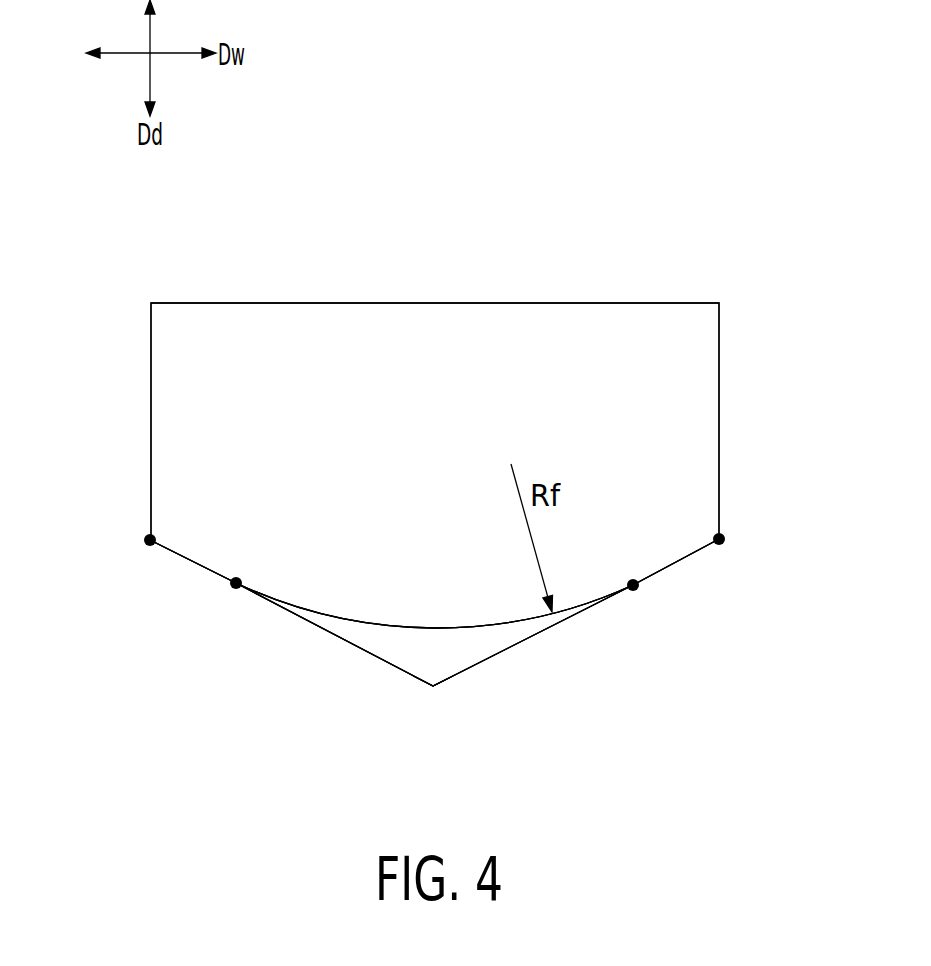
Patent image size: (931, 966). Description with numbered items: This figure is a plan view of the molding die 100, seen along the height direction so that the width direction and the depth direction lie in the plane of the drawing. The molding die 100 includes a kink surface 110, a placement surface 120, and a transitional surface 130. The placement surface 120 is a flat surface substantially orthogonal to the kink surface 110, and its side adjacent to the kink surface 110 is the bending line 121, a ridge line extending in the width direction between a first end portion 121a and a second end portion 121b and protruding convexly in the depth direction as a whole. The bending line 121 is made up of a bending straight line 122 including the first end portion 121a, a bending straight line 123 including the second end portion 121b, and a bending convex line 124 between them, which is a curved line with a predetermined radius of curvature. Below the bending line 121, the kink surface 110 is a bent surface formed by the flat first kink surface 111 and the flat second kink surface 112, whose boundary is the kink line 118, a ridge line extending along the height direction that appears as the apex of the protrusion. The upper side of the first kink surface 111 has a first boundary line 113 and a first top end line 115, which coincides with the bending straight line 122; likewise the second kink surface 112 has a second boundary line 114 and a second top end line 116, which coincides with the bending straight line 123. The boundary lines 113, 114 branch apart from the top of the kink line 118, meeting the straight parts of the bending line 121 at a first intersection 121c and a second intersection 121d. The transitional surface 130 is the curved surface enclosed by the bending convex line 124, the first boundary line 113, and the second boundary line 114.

The molding die 100 is at (430, 252).
The kink surface 110 is at (475, 667).
The first kink surface 111 is at (313, 624).
The second kink surface 112 is at (557, 624).
The first boundary line 113 is at (292, 613).
The second boundary line 114 is at (580, 613).
The first top end line 115 is at (177, 556).
The second top end line 116 is at (698, 551).
The kink line 118 is at (433, 689).
The placement surface 120 is at (552, 335).
The bending line 121 is at (434, 583).
The first end portion 121a is at (144, 540).
The second end portion 121b is at (725, 540).
The first intersection 121c is at (236, 578).
The second intersection 121d is at (633, 580).
The bending straight line 122 is at (192, 560).
The bending straight line 123 is at (680, 560).
The bending convex line 124 is at (370, 614).
The transitional surface 130 is at (447, 627).